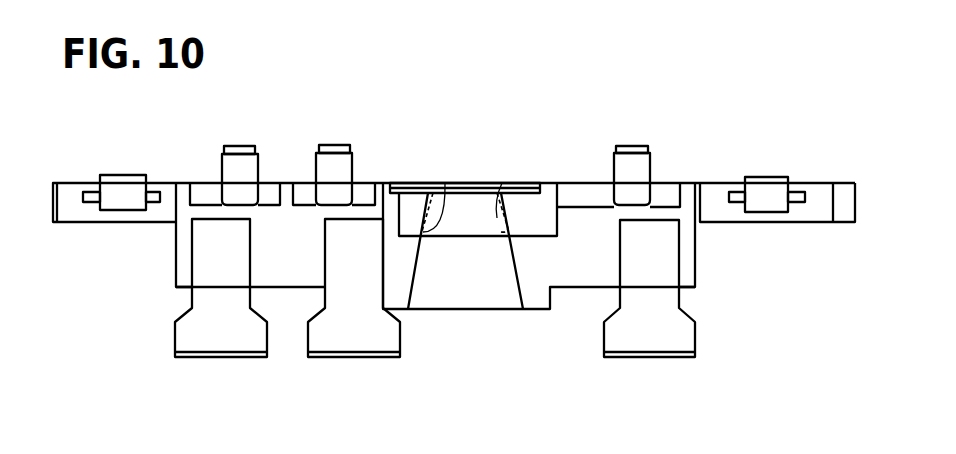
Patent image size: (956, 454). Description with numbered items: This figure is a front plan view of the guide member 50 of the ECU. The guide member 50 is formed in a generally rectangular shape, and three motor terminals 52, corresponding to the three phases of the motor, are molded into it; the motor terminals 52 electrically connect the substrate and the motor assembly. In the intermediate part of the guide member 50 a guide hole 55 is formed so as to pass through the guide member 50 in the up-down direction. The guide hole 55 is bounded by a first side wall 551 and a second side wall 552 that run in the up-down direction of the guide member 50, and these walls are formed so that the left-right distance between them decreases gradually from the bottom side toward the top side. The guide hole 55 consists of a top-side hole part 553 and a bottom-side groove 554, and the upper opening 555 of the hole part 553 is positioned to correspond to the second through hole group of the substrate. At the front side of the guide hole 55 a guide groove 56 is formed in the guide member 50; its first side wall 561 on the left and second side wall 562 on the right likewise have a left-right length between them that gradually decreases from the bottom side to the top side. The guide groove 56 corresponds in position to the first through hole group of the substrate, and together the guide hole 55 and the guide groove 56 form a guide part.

The guide member 50 is at (702, 281).
The motor terminals 52 is at (212, 338).
The guide hole 55 is at (417, 263).
The first side wall 551 is at (433, 183).
The second side wall 552 is at (492, 193).
The hole part 553 is at (481, 190).
The groove 554 is at (465, 267).
The upper opening 555 is at (478, 205).
The guide groove 56 is at (512, 226).
The first side wall 561 is at (445, 183).
The second side wall 562 is at (502, 183).